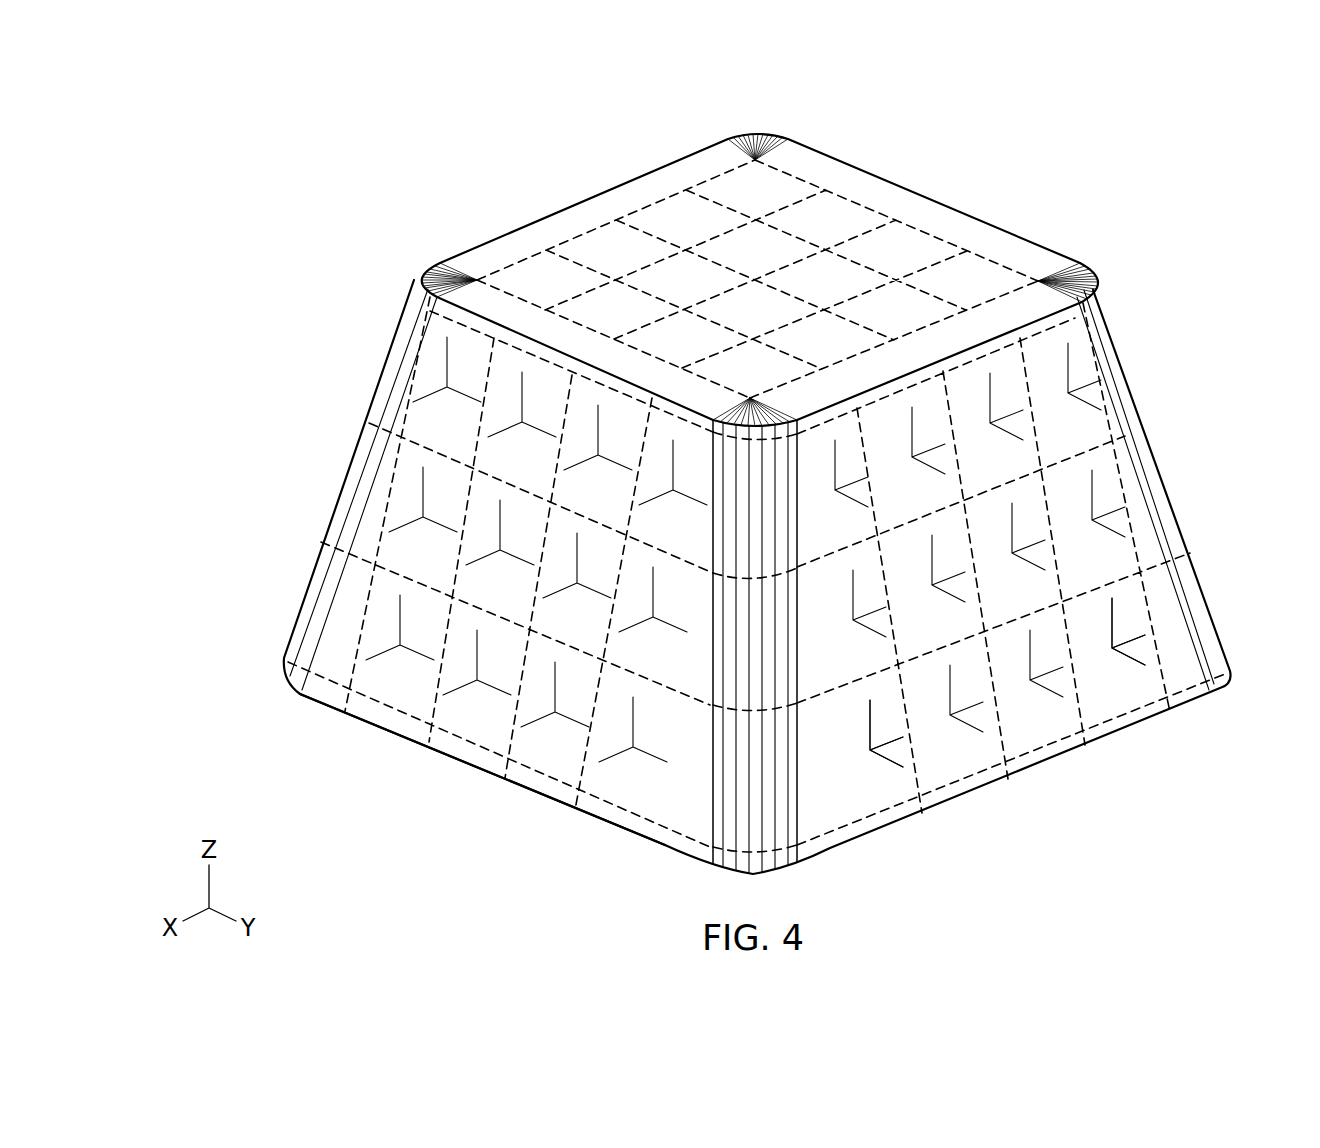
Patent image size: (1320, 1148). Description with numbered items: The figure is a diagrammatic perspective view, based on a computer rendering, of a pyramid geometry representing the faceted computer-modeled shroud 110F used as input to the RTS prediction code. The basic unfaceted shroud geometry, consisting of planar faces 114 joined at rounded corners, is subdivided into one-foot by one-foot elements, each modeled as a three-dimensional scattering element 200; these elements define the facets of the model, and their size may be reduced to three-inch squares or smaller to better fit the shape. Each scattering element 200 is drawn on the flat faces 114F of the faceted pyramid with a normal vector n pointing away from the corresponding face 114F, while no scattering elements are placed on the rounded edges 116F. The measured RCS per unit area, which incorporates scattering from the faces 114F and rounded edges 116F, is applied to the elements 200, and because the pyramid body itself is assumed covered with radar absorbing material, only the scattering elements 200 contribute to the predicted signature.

The fixture (frustum-shaped fixture body) 110F is at (442, 215).
The planar face 114 is at (454, 769).
The face of faceted computer-modeled pyramid 114F is at (822, 223).
The rounded edge of faceted computer-modeled pyramid 116F is at (755, 655).
The three-dimensional scattering element 200 is at (752, 190).
The normal vector n is at (1118, 652).